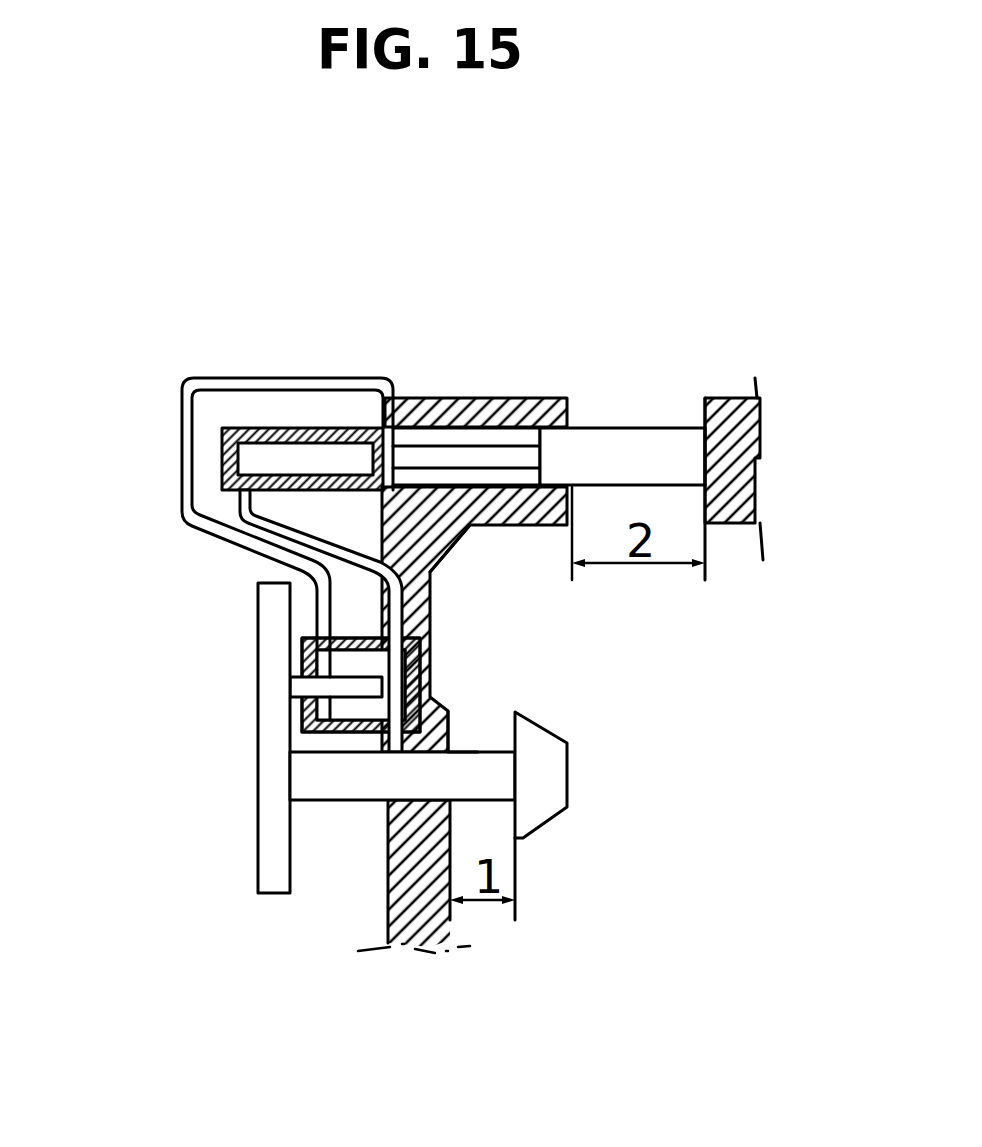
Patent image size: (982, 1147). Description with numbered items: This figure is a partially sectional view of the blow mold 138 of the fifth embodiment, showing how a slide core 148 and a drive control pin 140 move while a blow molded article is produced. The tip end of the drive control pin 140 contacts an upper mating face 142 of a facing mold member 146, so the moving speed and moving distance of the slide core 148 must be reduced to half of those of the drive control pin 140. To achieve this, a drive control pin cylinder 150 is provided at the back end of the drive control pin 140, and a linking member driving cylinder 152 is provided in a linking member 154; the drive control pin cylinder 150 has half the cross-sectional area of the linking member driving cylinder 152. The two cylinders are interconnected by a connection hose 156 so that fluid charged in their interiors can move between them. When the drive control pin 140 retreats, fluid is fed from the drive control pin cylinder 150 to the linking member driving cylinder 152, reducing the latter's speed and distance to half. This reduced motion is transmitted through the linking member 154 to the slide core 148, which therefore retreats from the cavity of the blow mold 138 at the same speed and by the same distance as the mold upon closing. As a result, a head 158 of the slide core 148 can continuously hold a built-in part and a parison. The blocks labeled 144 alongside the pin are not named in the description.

The blow mold 138 is at (443, 390).
The drive control pin 140 is at (607, 453).
The upper mating face 142 is at (703, 405).
The rail 144 is at (533, 398).
The facing mold member 146 is at (440, 563).
The slide core 148 is at (482, 738).
The drive control pin cylinder 150 is at (293, 457).
The linking member driving cylinder 152 is at (352, 708).
The linking member 154 is at (305, 607).
The connection hose 156 is at (180, 450).
The head 158 is at (545, 777).